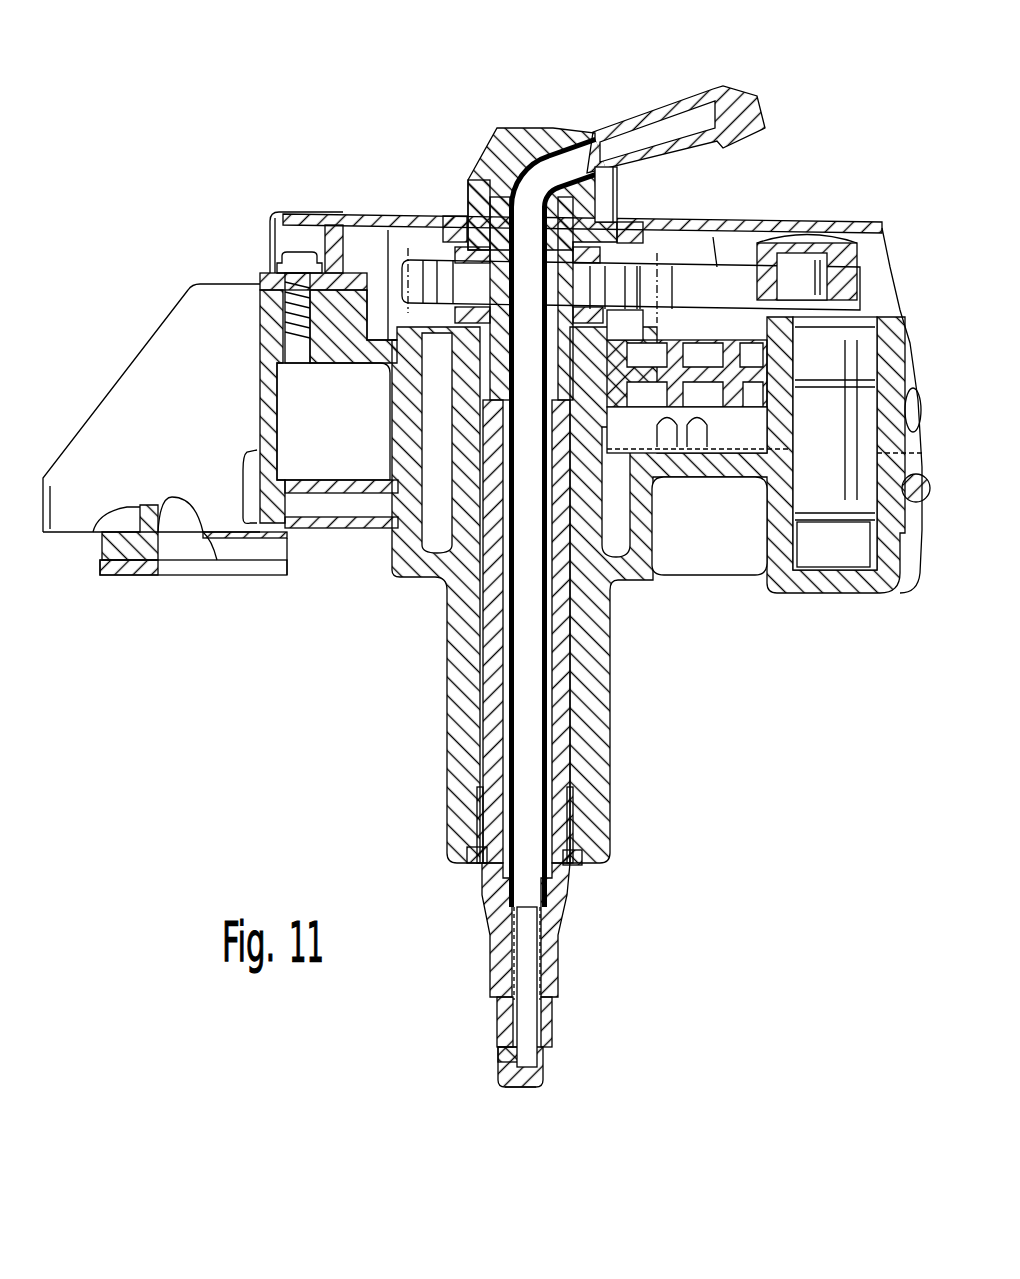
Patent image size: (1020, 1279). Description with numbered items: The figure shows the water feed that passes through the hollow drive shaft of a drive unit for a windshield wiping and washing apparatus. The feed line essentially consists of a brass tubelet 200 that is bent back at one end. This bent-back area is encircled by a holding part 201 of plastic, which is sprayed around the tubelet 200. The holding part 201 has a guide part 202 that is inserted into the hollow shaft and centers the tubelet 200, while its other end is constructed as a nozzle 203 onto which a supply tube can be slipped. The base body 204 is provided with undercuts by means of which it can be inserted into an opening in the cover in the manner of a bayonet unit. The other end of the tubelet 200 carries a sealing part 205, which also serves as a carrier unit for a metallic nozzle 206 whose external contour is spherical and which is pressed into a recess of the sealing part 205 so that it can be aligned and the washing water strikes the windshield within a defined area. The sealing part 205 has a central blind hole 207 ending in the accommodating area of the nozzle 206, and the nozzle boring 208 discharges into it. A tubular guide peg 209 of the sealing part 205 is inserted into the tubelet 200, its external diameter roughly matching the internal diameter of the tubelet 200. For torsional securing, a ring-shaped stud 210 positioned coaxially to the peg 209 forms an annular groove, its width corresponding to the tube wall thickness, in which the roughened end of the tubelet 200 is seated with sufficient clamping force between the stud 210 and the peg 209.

The brass tubelet 200 is at (543, 729).
The holding part 201 is at (533, 140).
The guide part 202 is at (468, 200).
The nozzle 203 is at (733, 90).
The base body 204 is at (630, 223).
The sealing part 205 is at (547, 1058).
The metallic nozzle 206 is at (497, 1062).
The central blind hole 207 is at (523, 970).
The nozzle boring 208 is at (512, 1087).
The guide peg 209 is at (540, 920).
The ring-shaped stud 210 is at (557, 1020).